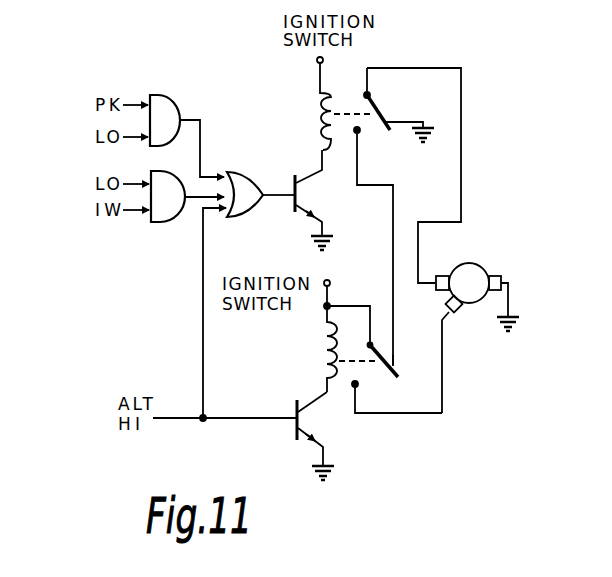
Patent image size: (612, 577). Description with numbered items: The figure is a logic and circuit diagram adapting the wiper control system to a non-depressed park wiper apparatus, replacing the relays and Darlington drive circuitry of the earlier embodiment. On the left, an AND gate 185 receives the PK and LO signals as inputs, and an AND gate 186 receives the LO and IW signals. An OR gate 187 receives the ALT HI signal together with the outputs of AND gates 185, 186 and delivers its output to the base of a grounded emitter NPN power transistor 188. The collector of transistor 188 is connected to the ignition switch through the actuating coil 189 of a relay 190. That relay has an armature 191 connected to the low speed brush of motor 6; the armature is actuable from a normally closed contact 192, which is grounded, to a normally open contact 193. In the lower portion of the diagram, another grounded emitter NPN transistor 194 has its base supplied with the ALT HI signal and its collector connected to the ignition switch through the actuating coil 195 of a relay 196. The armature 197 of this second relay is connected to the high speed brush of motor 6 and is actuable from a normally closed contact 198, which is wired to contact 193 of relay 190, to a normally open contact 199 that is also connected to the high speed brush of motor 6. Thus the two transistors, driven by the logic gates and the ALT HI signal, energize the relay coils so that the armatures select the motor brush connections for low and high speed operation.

The motor 6 is at (470, 275).
The AND gate 185 is at (170, 117).
The AND gate 186 is at (164, 224).
The OR gate 187 is at (253, 185).
The grounded emitter NPN power transistor 188 is at (293, 203).
The actuating coil 189 is at (313, 112).
The relay 190 is at (358, 59).
The armature 191 is at (377, 120).
The normally closed contact 192 is at (387, 124).
The normally open contact 193 is at (357, 133).
The grounded emitter NPN transistor 194 is at (293, 422).
The actuating coil 195 is at (326, 352).
The relay 196 is at (353, 293).
The armature 197 is at (386, 364).
The normally closed contact 198 is at (394, 364).
The normally open contact 199 is at (355, 387).